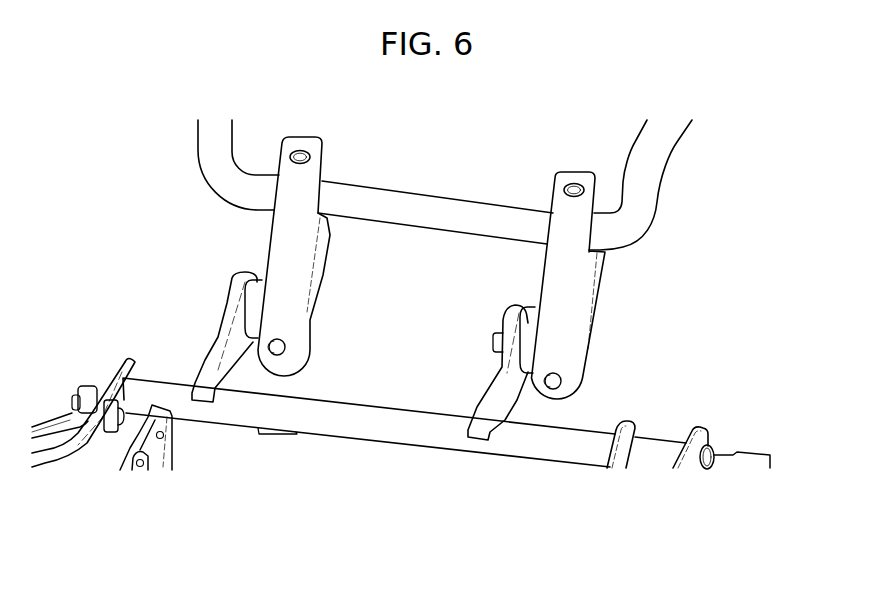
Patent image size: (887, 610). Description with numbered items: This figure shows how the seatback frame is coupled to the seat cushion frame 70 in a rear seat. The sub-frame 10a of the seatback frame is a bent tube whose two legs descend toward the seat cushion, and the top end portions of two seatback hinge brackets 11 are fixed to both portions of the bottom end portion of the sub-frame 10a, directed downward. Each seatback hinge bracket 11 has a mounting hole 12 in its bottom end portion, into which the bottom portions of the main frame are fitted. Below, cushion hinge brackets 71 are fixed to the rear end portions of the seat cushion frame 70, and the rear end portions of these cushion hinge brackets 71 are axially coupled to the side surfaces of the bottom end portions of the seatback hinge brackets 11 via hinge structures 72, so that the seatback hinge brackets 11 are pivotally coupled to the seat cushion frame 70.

The sub-frame 10a is at (650, 187).
The seatback hinge bracket 11 is at (286, 251).
The mounting hole 12 is at (558, 381).
The seat cushion frame 70 is at (108, 458).
The cushion hinge bracket 71 is at (505, 410).
The hinge structure 72 is at (536, 346).